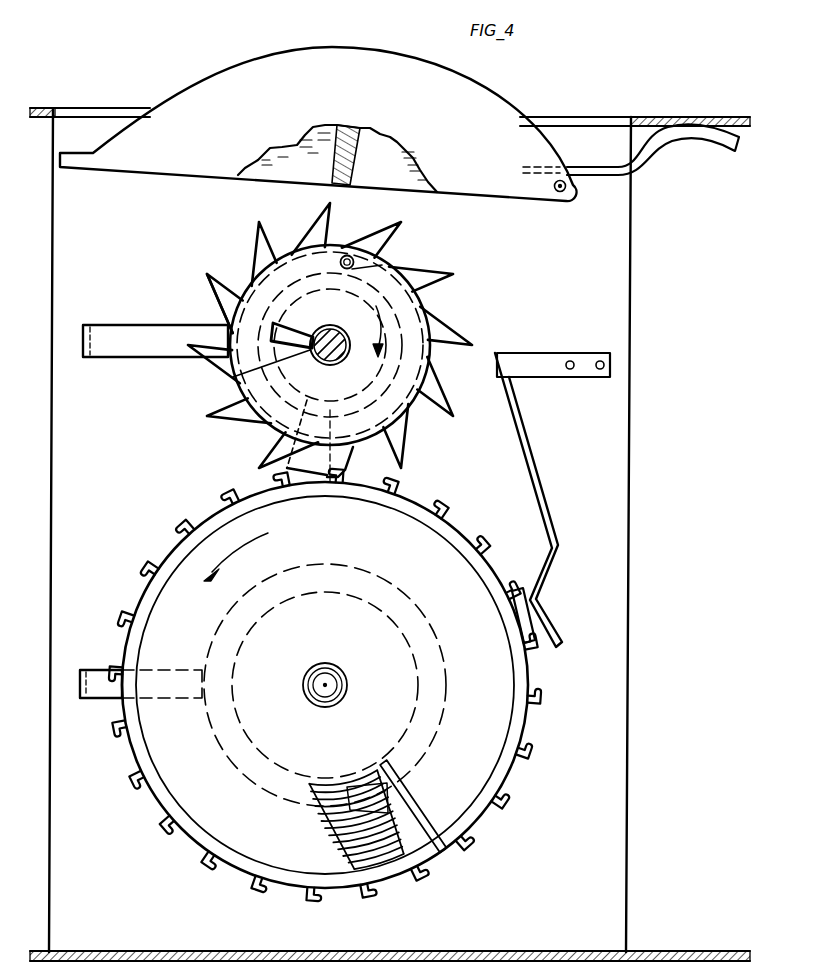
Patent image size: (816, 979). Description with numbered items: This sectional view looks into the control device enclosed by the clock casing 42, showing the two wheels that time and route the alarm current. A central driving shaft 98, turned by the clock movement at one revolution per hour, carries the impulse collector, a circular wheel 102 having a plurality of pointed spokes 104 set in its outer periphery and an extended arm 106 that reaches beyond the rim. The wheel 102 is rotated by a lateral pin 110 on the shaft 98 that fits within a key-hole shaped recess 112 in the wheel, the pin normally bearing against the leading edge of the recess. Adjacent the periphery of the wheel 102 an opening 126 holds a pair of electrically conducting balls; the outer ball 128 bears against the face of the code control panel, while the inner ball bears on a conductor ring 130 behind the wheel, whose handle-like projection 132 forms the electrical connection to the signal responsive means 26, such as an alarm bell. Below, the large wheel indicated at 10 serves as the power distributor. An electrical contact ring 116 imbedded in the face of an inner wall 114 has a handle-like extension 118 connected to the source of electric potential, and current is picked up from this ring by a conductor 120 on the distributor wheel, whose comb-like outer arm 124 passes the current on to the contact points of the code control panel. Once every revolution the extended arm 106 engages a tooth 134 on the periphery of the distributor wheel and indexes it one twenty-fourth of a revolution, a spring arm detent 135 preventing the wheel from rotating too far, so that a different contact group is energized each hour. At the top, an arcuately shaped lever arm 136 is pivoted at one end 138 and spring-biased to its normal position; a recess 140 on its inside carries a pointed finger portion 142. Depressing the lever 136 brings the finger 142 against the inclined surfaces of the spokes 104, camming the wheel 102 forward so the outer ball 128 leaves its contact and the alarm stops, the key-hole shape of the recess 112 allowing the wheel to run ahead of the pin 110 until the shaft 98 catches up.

The rotary drum 10 is at (299, 685).
The signal responsive means 26 is at (324, 335).
The clock casing 42 is at (390, 534).
The central driving shaft 98 is at (330, 326).
The circular wheel 102 is at (400, 403).
The pointed spokes 104 is at (230, 280).
The extended arm 106 is at (280, 463).
The lateral pin 110 is at (280, 323).
The key-hole shaped recess 112 is at (235, 377).
The inner wall 114 is at (613, 477).
The electrical contact ring 116 is at (443, 680).
The handle-like extension 118 is at (107, 690).
The conductor 120 is at (383, 766).
The comb-like outer arm 124 is at (353, 787).
The opening 126 is at (343, 256).
The outer ball 128 is at (355, 268).
The conductor ring 130 is at (217, 297).
The handle-like projection 132 is at (135, 338).
The tooth 134 is at (447, 512).
The spring arm detent 135 is at (537, 613).
The lever arm 136 is at (350, 50).
The pivoted end 138 is at (560, 197).
The recess 140 is at (380, 160).
The pointed finger portion 142 is at (332, 160).